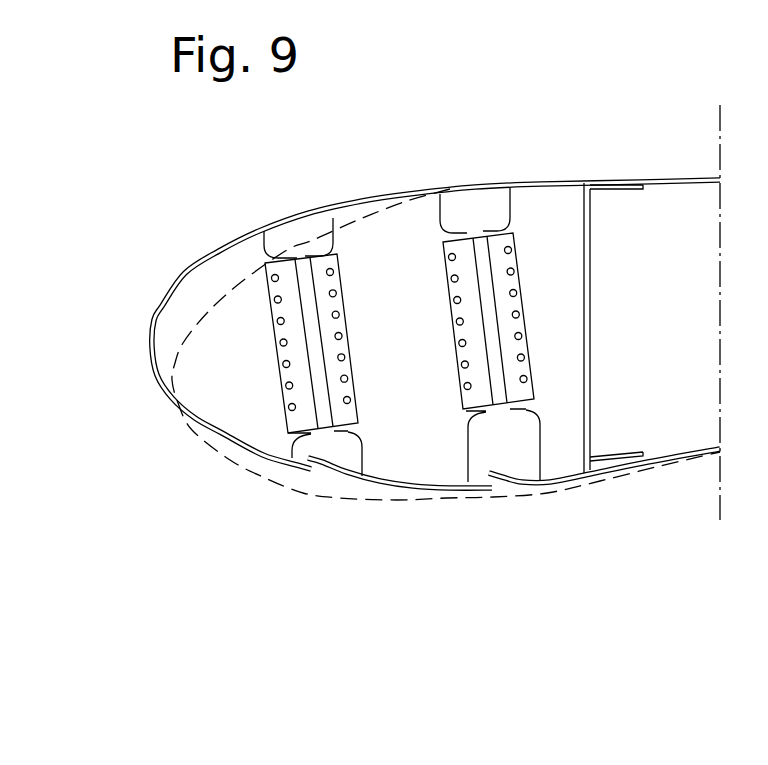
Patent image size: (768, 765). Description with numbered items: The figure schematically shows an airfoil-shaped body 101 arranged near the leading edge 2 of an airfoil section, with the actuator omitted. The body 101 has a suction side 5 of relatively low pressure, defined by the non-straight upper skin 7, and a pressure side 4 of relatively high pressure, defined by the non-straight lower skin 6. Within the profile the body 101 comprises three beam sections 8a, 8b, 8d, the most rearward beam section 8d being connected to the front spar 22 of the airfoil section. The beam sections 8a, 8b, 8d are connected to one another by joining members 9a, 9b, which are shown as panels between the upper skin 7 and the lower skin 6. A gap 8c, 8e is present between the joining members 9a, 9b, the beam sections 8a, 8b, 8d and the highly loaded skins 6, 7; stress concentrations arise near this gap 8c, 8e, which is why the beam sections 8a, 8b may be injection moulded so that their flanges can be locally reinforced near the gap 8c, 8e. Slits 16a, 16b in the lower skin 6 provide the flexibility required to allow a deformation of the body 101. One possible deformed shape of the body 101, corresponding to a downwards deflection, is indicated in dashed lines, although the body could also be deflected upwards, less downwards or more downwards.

The leading edge 2 is at (124, 357).
The pressure side 4 is at (604, 557).
The suction side 5 is at (592, 96).
The lower skin 6 is at (414, 487).
The upper skin 7 is at (349, 204).
The beam section 8a is at (216, 391).
The beam section 8b is at (397, 231).
The gap 8c is at (302, 240).
The beam section 8d is at (526, 209).
The gap 8e is at (472, 209).
The joining member 9a is at (345, 343).
The joining member 9b is at (517, 320).
The slit 16a is at (316, 478).
The slit 16b is at (495, 480).
The front spar 22 is at (590, 312).
The body 101 is at (207, 488).